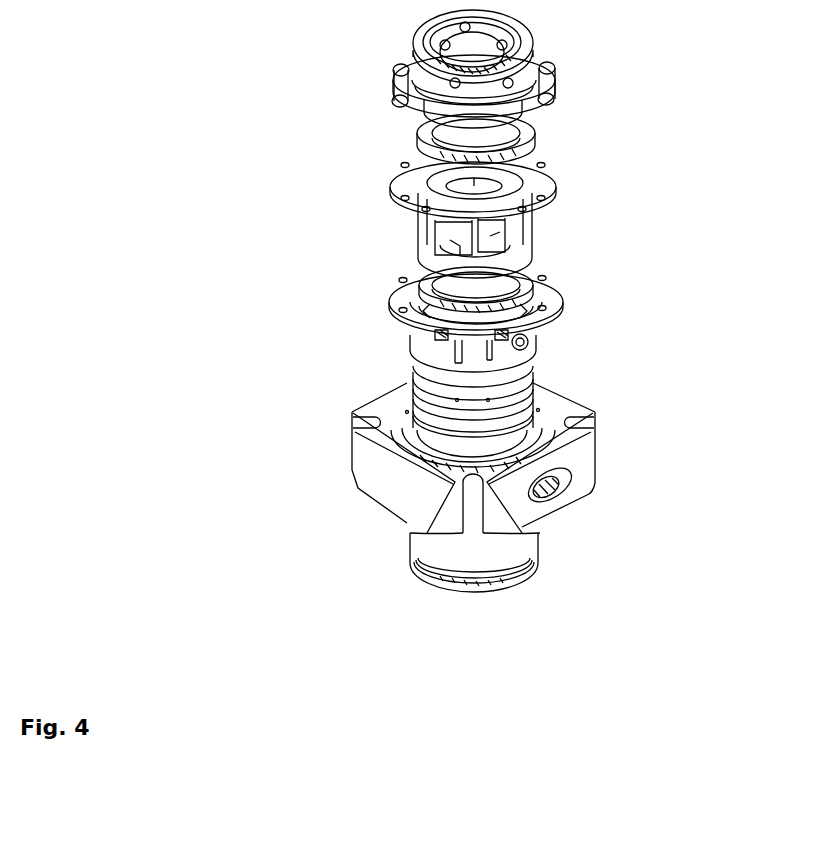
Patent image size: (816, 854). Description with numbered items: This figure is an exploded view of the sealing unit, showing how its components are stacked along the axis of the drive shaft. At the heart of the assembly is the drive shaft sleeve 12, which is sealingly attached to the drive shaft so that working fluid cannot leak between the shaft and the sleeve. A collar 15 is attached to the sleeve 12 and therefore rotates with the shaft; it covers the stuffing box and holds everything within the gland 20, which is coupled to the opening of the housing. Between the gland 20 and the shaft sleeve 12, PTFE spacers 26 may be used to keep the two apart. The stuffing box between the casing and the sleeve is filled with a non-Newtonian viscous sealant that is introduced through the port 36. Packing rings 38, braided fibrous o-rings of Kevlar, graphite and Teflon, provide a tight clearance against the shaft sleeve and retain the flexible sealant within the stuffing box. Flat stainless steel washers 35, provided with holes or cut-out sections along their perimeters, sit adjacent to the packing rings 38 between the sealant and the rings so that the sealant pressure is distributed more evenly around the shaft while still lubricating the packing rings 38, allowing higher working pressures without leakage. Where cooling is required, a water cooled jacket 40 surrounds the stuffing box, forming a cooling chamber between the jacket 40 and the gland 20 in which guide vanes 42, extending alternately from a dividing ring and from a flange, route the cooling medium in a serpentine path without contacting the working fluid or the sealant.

The drive shaft sleeve 12 is at (425, 442).
The collar 15 is at (545, 57).
The gland 20 is at (425, 442).
The spacers 26 is at (538, 119).
The washers 35 is at (533, 170).
The port 36 is at (560, 487).
The packing rings 38 is at (421, 142).
The water cooled jacket 40 is at (545, 326).
The guide vanes 42 is at (400, 188).